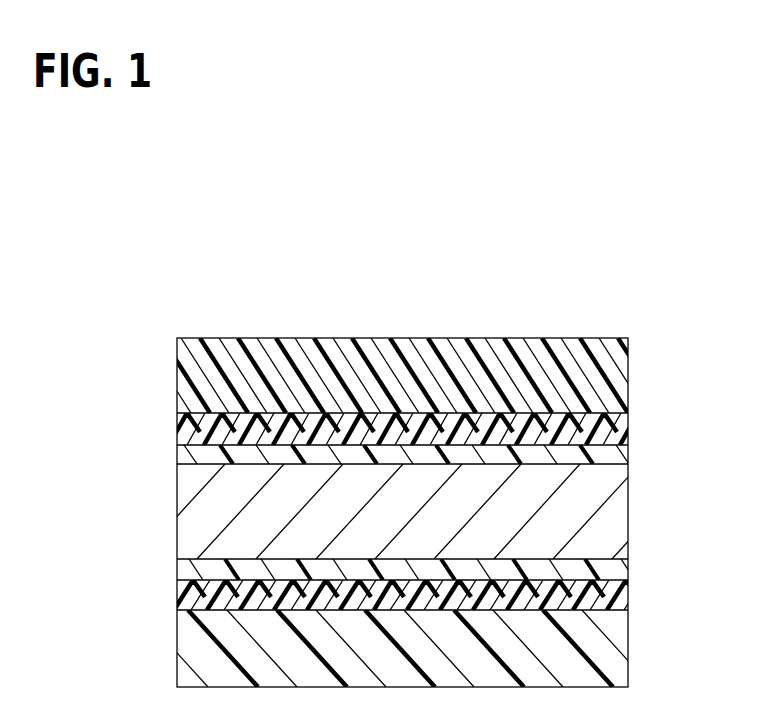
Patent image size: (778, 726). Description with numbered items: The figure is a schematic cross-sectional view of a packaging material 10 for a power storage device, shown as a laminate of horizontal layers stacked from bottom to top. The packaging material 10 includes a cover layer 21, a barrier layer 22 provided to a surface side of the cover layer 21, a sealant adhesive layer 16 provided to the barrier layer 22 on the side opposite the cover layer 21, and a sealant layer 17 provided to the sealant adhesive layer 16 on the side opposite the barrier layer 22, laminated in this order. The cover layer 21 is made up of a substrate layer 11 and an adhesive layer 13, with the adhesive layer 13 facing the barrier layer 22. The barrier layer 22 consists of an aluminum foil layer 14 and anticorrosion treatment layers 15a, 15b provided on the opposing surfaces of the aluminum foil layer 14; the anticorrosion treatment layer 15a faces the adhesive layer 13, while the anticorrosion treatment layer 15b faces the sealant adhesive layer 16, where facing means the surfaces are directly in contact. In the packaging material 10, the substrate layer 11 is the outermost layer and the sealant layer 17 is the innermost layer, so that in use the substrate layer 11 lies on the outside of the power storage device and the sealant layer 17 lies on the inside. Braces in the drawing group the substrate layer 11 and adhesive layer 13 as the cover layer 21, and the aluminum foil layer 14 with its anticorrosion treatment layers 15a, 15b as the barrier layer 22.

The packaging material 10 is at (420, 438).
The substrate layer 11 is at (628, 643).
The adhesive layer 13 is at (628, 592).
The aluminum foil layer 14 is at (628, 508).
The anticorrosion treatment layer 15a is at (433, 570).
The anticorrosion treatment layer 15b is at (628, 452).
The sealant adhesive layer 16 is at (628, 427).
The sealant layer 17 is at (628, 373).
The cover layer 21 is at (430, 632).
The barrier layer 22 is at (420, 500).